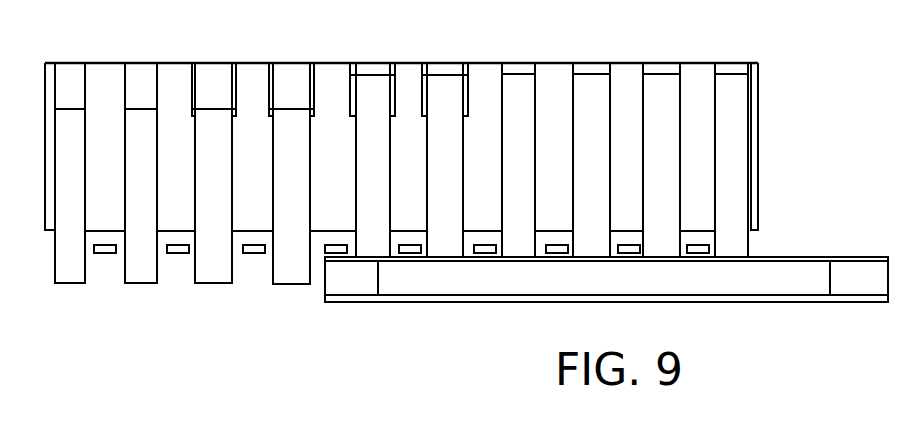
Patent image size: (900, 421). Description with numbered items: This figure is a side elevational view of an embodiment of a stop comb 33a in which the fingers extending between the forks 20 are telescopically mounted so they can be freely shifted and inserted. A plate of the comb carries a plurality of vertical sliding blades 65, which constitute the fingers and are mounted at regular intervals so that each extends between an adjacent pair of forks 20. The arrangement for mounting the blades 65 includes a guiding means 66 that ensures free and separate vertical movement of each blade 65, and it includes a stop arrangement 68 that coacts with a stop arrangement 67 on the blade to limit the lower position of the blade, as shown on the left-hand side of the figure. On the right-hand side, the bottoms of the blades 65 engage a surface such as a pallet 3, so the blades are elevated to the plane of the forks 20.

The pallet 3 is at (797, 254).
The forks 20 is at (253, 255).
The stop comb 33a is at (761, 117).
The vertical sliding blades 65 is at (450, 97).
The guiding means 66 is at (352, 104).
The stop arrangement on the blade 67 is at (268, 108).
The stop arrangement 68 is at (422, 116).